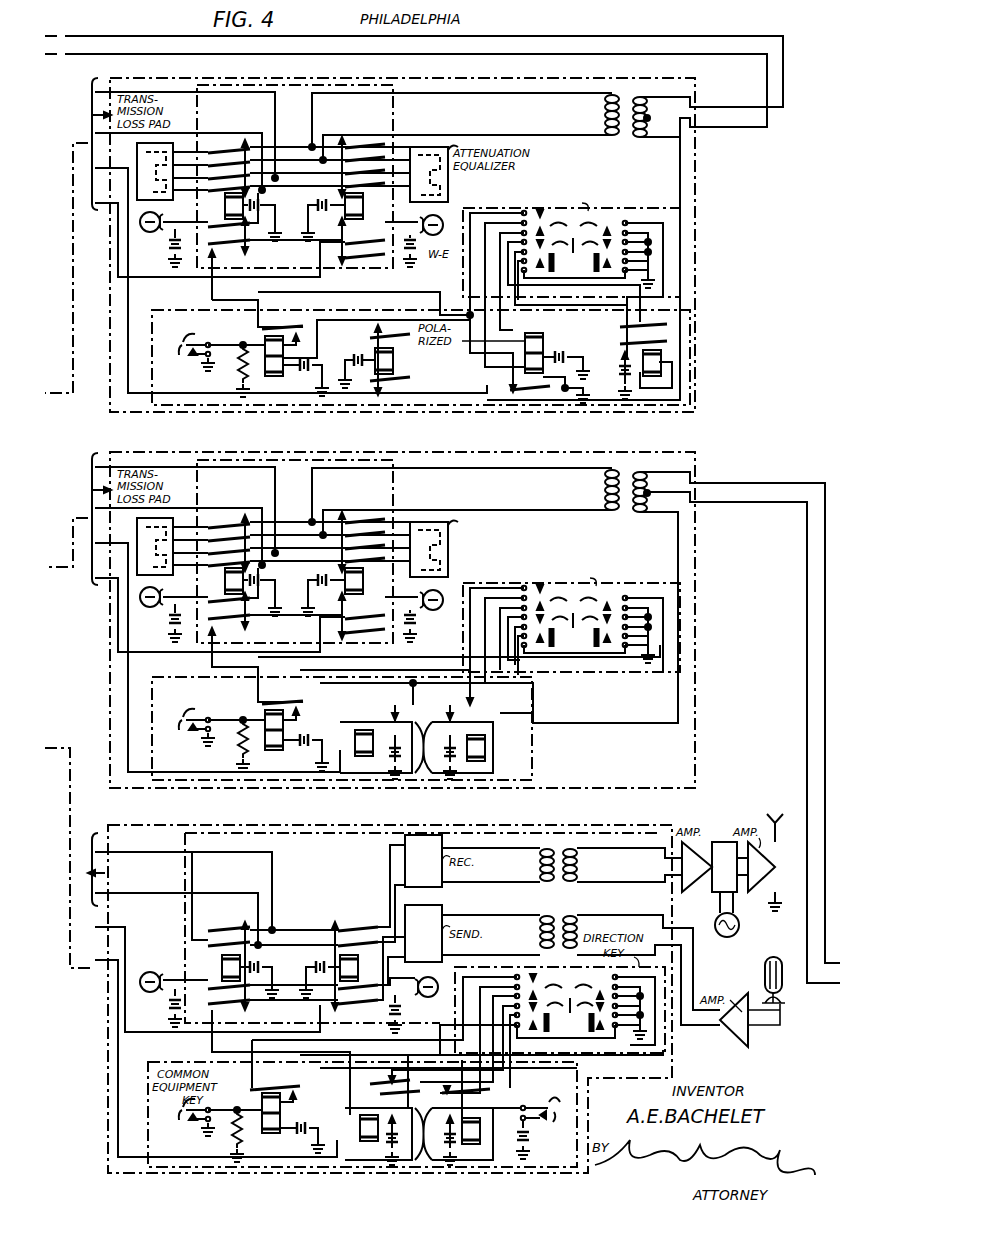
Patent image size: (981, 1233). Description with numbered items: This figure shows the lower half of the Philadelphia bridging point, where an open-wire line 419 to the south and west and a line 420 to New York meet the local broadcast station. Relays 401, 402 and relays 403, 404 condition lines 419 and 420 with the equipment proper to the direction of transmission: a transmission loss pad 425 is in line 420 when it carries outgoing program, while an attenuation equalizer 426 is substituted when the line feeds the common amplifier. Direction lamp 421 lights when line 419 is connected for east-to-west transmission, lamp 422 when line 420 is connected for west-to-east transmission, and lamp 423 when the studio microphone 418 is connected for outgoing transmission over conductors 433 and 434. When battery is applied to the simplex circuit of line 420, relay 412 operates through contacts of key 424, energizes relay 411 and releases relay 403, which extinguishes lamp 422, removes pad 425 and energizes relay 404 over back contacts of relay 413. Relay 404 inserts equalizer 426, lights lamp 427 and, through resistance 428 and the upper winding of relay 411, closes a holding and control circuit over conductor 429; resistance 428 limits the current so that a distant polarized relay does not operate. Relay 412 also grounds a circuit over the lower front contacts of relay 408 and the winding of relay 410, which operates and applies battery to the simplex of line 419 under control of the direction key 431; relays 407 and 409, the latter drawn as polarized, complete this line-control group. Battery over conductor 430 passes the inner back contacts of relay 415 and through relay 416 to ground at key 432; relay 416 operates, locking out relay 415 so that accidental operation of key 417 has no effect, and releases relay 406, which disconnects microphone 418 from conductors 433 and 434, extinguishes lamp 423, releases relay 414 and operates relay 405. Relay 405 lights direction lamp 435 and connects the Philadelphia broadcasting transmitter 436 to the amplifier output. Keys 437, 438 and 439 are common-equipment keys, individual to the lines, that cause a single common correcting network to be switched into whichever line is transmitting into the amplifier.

The relay 401 is at (225, 200).
The relay 402 is at (363, 205).
The relay 403 is at (225, 575).
The relay 404 is at (363, 580).
The relay 405 is at (222, 966).
The relay 406 is at (358, 967).
The relay 407 is at (262, 340).
The relay 408 is at (372, 348).
The polarized relay 409 is at (545, 380).
The relay 410 is at (636, 378).
The relay 411 is at (262, 716).
The relay 412 is at (368, 728).
The relay 413 is at (485, 746).
The relay 414 is at (262, 1137).
The relay 415 is at (362, 1114).
The relay 416 is at (462, 1133).
The key 417 is at (541, 1129).
The microphone 418 is at (774, 957).
The line 419 is at (783, 88).
The line 420 is at (758, 494).
The direction lamp 421 is at (170, 239).
The direction lamp 422 is at (170, 614).
The direction lamp 423 is at (430, 998).
The key 424 is at (571, 637).
The transmission loss pad 425 is at (152, 518).
The attenuation equalizer 426 is at (448, 560).
The direction lamp 427 is at (440, 612).
The resistance 428 is at (240, 740).
The conductor 429 is at (118, 595).
The conductor 430 is at (127, 612).
The key 431 is at (571, 285).
The key 432 is at (458, 1030).
The conductor 433 is at (168, 859).
The conductor 434 is at (168, 898).
The direction lamp 435 is at (170, 990).
The broadcasting transmitter 436 is at (723, 840).
The key 437 is at (187, 356).
The key 438 is at (187, 731).
The key 439 is at (185, 1121).